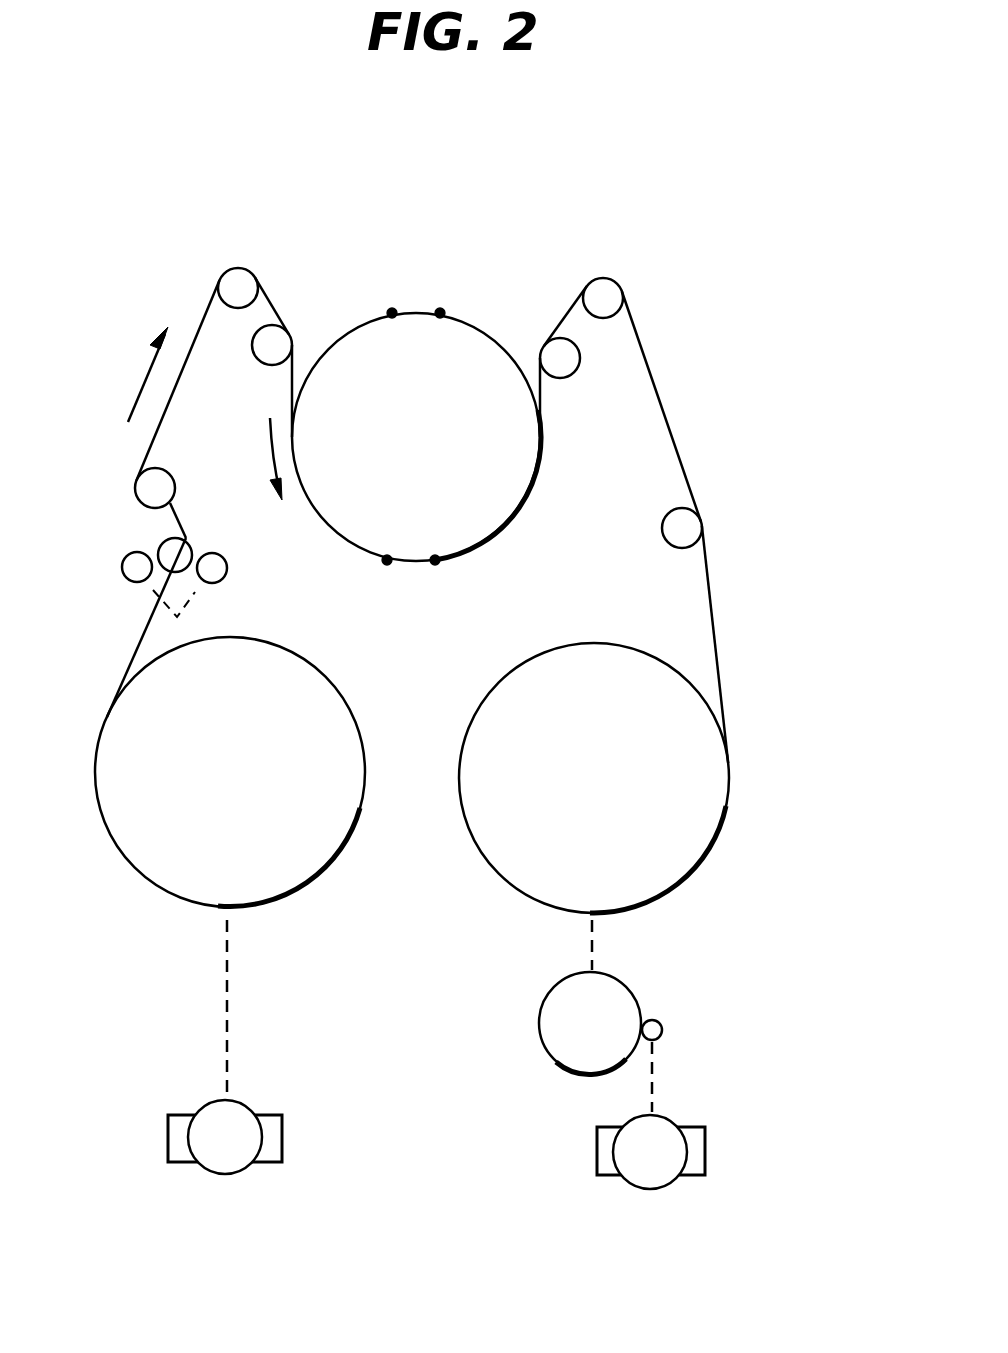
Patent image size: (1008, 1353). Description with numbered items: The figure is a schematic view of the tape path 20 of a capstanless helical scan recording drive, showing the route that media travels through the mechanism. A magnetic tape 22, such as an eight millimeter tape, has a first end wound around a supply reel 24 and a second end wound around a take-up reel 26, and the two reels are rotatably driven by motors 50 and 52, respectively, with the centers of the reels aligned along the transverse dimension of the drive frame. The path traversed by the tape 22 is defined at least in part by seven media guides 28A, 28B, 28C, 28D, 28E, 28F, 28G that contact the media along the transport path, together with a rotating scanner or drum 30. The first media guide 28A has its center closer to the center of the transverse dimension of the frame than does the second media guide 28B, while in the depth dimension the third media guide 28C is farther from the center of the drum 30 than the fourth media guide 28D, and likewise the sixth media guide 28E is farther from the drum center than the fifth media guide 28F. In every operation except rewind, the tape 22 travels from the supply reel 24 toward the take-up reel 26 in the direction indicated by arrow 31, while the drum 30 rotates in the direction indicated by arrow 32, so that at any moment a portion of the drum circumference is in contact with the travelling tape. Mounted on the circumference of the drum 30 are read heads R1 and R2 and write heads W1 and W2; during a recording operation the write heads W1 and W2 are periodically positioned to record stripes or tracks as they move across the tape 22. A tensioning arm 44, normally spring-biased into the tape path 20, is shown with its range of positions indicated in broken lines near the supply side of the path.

The tape path 20 is at (778, 226).
The magnetic tape 22 is at (690, 465).
The supply reel 24 is at (320, 692).
The take-up reel 26 is at (595, 658).
The first media guide 28A is at (175, 548).
The second media guide 28B is at (142, 496).
The third media guide 28C is at (226, 287).
The fourth media guide 28D is at (279, 338).
The sixth media guide 28E is at (545, 353).
The fifth media guide 28F is at (610, 288).
The seventh media guide 28G is at (690, 525).
The drum 30 is at (512, 488).
The arrow 31 is at (140, 393).
The arrow 32 is at (268, 445).
The tensioning arm 44 is at (140, 597).
The motor 50 is at (283, 1141).
The motor 52 is at (706, 1155).
The read head R1 is at (392, 312).
The read head R2 is at (440, 312).
The write head W1 is at (436, 562).
The write head W2 is at (387, 562).